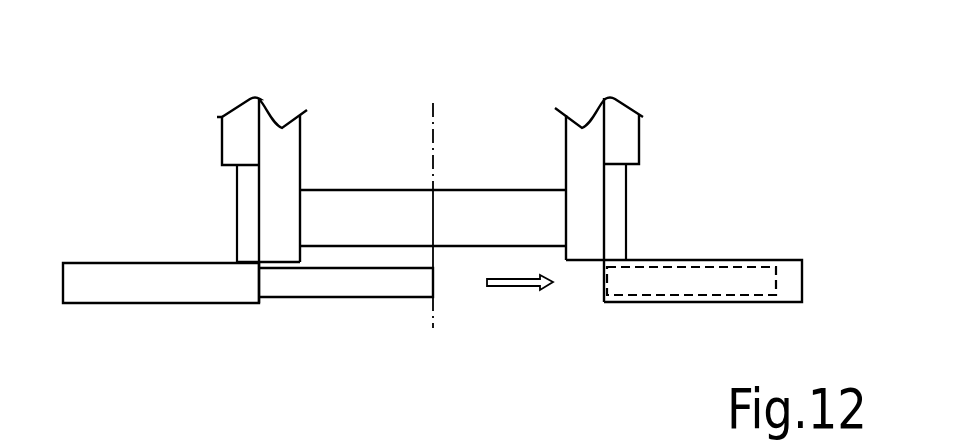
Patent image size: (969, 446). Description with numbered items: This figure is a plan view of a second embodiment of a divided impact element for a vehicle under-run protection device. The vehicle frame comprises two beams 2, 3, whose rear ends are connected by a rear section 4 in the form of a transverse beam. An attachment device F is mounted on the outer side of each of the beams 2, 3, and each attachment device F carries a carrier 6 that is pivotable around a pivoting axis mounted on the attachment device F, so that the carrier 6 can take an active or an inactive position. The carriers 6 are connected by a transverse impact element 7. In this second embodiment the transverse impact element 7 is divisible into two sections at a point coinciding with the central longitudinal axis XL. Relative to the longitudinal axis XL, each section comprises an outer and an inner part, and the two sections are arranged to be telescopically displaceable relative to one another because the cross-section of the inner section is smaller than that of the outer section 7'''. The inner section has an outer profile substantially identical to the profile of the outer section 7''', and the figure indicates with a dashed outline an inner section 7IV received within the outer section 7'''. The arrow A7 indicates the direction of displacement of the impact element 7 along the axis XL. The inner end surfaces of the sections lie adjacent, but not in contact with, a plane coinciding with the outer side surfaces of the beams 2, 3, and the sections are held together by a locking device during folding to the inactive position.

The beam 2 is at (283, 133).
The beam 3 is at (582, 134).
The rear section 4 is at (397, 233).
The carrier 6 is at (246, 226).
The transverse impact element 7 is at (248, 346).
The outer section 7''' is at (744, 250).
The slide bar in fourth position 7IV is at (723, 284).
The attachment device F is at (222, 148).
The central longitudinal axis XL is at (436, 219).
The direction of movement of slide bar A7 is at (522, 292).